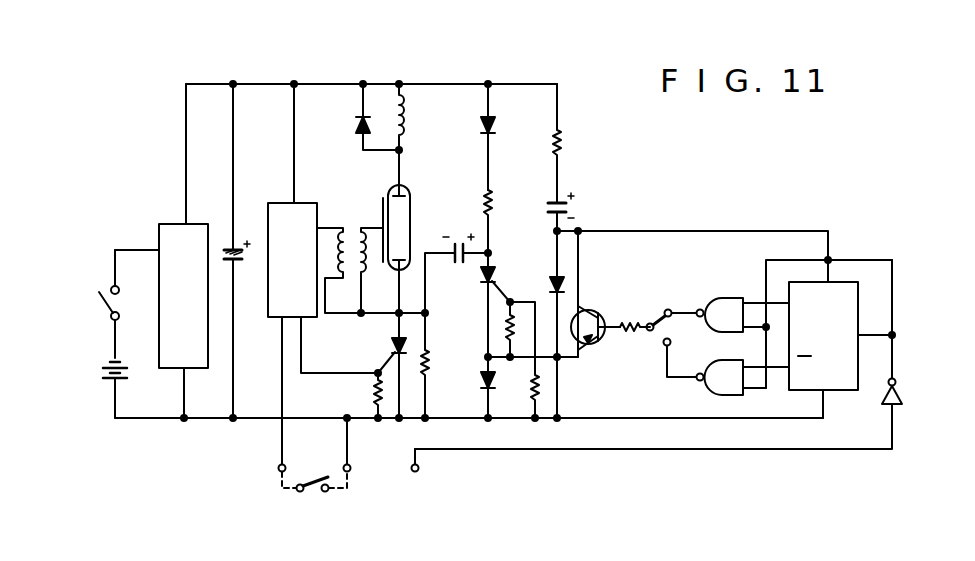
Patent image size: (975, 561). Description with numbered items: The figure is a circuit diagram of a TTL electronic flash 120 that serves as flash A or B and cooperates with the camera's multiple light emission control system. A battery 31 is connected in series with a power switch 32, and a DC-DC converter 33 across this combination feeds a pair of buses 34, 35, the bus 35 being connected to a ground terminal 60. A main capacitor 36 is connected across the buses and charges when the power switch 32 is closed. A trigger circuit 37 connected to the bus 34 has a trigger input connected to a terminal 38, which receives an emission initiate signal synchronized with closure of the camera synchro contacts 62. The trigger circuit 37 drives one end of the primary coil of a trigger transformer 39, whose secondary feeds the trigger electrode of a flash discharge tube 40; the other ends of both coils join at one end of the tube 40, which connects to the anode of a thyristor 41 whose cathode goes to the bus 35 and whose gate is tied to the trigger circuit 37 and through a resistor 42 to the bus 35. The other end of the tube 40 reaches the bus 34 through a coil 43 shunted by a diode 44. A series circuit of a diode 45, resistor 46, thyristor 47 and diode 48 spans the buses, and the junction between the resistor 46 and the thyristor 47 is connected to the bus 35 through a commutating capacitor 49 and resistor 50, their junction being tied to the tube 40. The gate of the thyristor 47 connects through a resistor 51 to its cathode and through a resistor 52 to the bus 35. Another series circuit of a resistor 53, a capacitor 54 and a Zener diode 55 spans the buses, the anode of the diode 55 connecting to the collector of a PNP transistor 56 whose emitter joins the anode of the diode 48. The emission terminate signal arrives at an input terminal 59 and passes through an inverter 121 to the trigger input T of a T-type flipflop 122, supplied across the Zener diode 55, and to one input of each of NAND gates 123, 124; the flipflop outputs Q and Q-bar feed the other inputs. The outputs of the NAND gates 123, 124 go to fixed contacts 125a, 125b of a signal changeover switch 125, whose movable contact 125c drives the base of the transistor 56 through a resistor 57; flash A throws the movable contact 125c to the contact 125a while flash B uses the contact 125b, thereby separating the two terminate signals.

The battery 31 is at (118, 372).
The power switch 32 is at (123, 298).
The DC-DC converter 33 is at (164, 224).
The bus 34 is at (264, 84).
The bus 35 is at (196, 418).
The main capacitor 36 is at (241, 260).
The trigger circuit 37 is at (270, 203).
The terminal 38 is at (278, 470).
The trigger transformer 39 is at (350, 228).
The flash discharge tube 40 is at (412, 217).
The thyristor 41 is at (391, 347).
The resistor 42 is at (373, 393).
The coil 43 is at (406, 120).
The diode 44 is at (357, 120).
The diode 45 is at (495, 121).
The resistor 46 is at (483, 195).
The thyristor 47 is at (494, 272).
The diode 48 is at (483, 382).
The commutating capacitor 49 is at (455, 265).
The resistor 50 is at (430, 357).
The resistor 51 is at (505, 328).
The resistor 52 is at (532, 396).
The resistor 53 is at (562, 142).
The capacitor 54 is at (552, 211).
The Zener diode 55 is at (553, 284).
The PNP transistor 56 is at (589, 346).
The resistor 57 is at (628, 323).
The input terminal 59 is at (419, 470).
The ground terminal 60 is at (351, 470).
The synchro contacts 62 is at (311, 481).
The electronic flash 120 is at (450, 78).
The inverter 121 is at (880, 402).
The T-type flipflop 122 is at (841, 296).
The NAND gate 123 is at (730, 300).
The NAND gate 124 is at (712, 390).
The signal changeover switch 125 is at (673, 324).
The fixed contact 125a is at (671, 310).
The fixed contact 125b is at (671, 342).
The movable contact 125c is at (638, 338).